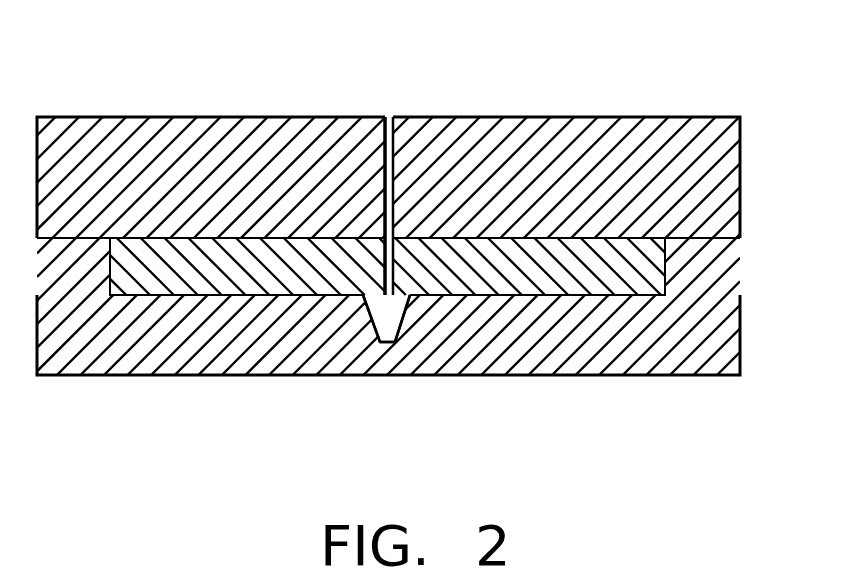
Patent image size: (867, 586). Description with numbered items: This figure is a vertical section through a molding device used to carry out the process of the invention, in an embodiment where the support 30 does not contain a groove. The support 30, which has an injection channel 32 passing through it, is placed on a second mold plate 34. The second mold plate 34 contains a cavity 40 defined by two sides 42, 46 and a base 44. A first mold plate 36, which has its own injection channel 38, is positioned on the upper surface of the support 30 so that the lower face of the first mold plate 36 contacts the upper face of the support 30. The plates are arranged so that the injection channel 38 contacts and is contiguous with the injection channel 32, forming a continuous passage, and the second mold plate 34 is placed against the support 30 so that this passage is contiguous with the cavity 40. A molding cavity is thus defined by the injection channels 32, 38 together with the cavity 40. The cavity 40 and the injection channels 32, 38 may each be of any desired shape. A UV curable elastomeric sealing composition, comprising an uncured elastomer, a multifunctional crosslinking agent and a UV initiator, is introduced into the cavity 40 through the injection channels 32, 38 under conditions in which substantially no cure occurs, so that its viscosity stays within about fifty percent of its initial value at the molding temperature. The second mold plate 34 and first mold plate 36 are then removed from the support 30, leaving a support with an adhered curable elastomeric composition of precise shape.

The support 30 is at (635, 270).
The injection channel 32 is at (385, 270).
The second mold plate 34 is at (677, 335).
The first mold plate 36 is at (677, 172).
The injection channel 38 is at (397, 143).
The cavity 40 is at (398, 313).
The side 42 is at (368, 316).
The base 44 is at (386, 343).
The side 46 is at (397, 313).